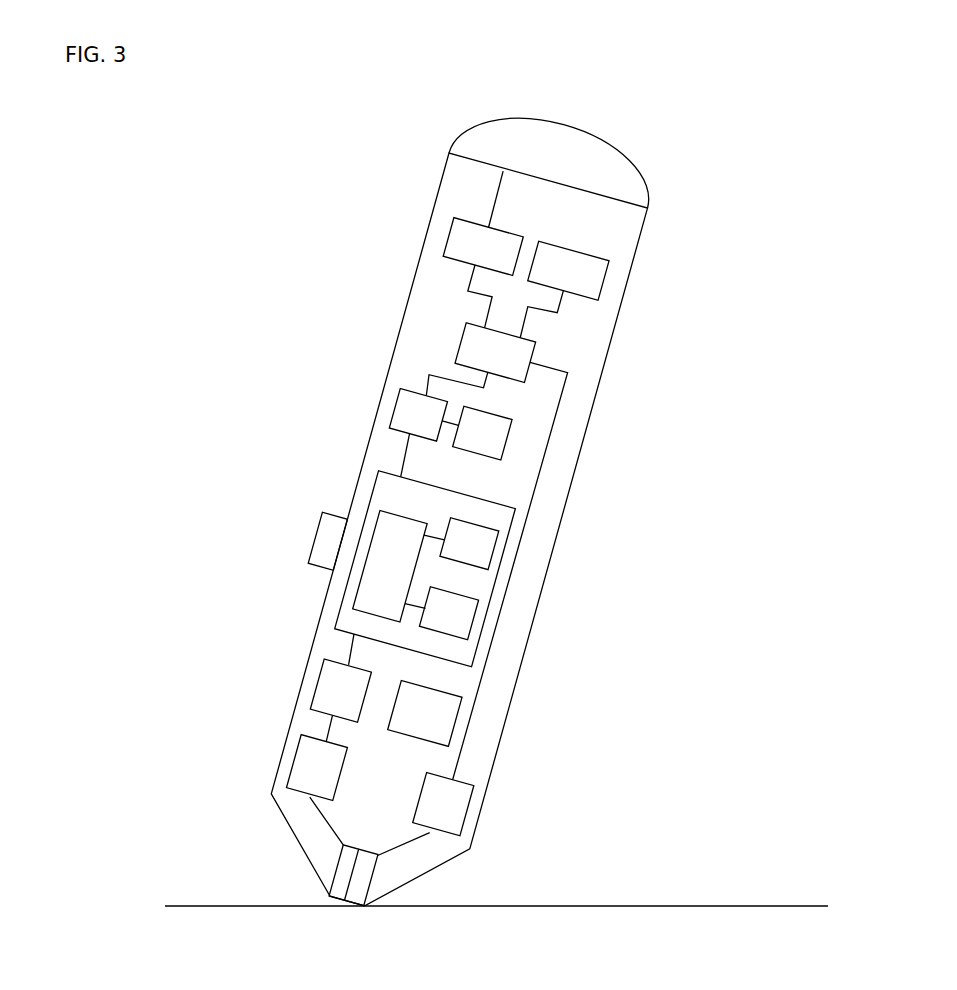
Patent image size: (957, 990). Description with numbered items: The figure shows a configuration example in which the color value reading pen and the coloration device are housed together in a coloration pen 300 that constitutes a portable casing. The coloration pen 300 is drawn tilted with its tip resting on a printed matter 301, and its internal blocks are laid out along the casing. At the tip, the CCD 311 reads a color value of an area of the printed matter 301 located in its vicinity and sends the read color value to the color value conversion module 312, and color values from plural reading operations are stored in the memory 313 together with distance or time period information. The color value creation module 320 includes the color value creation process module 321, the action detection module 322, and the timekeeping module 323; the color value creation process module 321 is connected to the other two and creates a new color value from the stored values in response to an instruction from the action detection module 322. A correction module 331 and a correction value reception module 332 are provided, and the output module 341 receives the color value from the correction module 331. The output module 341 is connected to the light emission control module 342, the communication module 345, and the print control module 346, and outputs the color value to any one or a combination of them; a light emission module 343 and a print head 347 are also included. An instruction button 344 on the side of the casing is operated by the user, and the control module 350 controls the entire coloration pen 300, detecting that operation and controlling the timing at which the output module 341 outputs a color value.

The coloration pen 300 is at (417, 268).
The printed matter 301 is at (752, 905).
The CCD 311 is at (338, 866).
The color value conversion module 312 is at (300, 767).
The memory 313 is at (322, 683).
The color value creation module 320 is at (343, 607).
The color value creation process module 321 is at (380, 518).
The action detection module 322 is at (490, 549).
The timekeeping module 323 is at (472, 616).
The correction module 331 is at (405, 400).
The correction value reception module 332 is at (500, 437).
The output module 341 is at (533, 352).
The light emission control module 342 is at (455, 232).
The light emission module 343 is at (640, 163).
The instruction button 344 is at (313, 543).
The communication module 345 is at (600, 278).
The print control module 346 is at (465, 806).
The print head 347 is at (372, 878).
The control module 350 is at (457, 715).